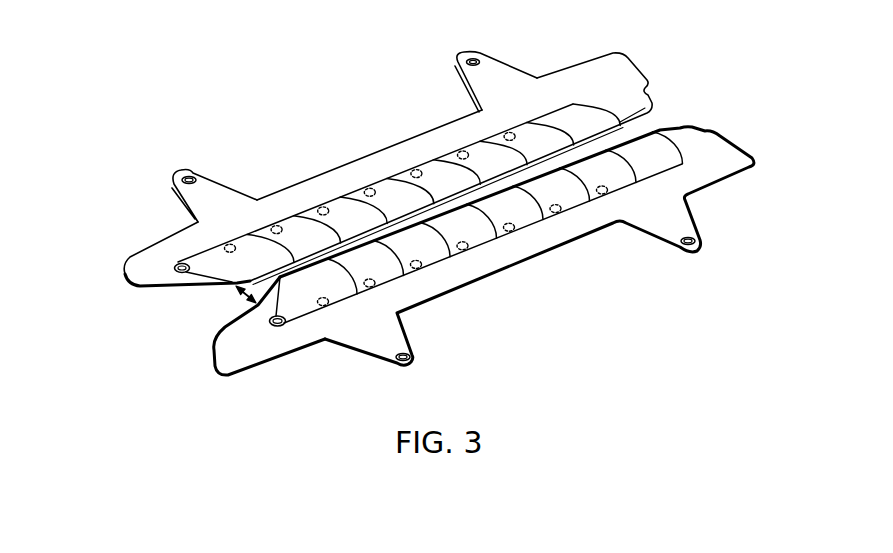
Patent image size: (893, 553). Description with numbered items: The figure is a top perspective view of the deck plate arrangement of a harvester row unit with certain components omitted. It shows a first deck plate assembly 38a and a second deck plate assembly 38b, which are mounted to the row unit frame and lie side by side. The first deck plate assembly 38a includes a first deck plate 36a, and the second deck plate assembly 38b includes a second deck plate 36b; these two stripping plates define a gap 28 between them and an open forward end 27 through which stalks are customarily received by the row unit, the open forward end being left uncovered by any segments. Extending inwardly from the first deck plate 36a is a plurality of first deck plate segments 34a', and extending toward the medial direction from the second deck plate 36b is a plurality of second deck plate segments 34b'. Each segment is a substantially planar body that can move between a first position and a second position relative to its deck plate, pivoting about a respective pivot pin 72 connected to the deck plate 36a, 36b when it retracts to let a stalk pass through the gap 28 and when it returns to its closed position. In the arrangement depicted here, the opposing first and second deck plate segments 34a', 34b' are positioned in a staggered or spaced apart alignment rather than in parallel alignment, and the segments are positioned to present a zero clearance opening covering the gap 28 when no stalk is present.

The open forward end 27 is at (440, 217).
The gap 28 is at (229, 298).
The first deck plate segments 34a' is at (500, 257).
The second deck plate segments 34b' is at (408, 162).
The first deck plate 36a is at (253, 350).
The second deck plate 36b is at (138, 260).
The first deck plate assembly 38a is at (509, 266).
The second deck plate assembly 38b is at (405, 145).
The pivot pin 72 is at (461, 154).